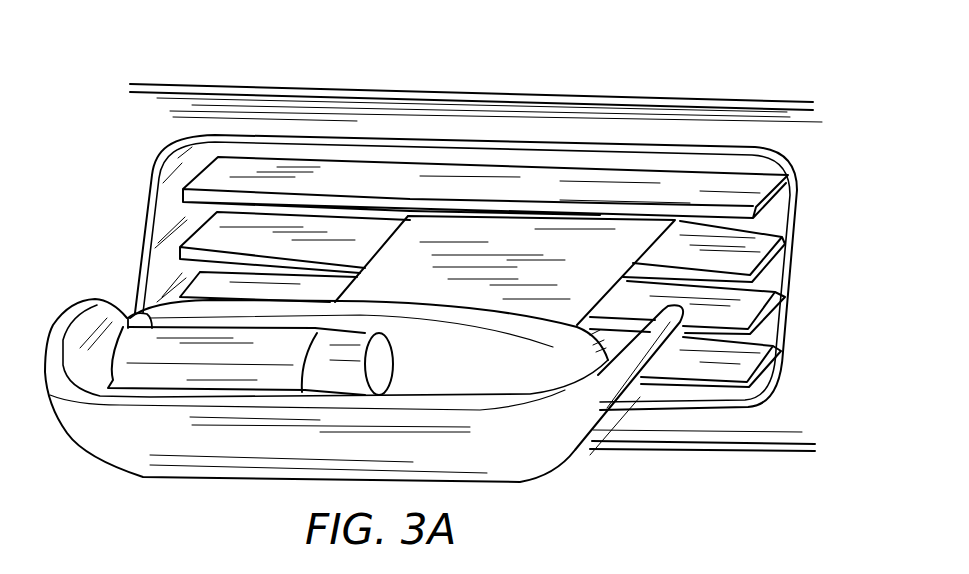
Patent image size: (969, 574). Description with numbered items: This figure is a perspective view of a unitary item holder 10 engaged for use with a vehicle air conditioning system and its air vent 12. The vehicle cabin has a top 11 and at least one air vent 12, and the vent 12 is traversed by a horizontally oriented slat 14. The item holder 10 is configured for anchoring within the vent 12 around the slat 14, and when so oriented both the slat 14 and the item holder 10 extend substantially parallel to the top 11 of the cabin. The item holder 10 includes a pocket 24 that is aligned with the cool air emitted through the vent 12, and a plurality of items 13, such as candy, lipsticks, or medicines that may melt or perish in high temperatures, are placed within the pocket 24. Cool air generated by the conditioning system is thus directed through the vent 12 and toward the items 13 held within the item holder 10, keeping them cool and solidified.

The item holder 10 is at (99, 147).
The top 11 is at (423, 33).
The air vent 12 is at (770, 196).
The items 13 is at (597, 368).
The slat 14 is at (790, 268).
The pocket 24 is at (119, 312).